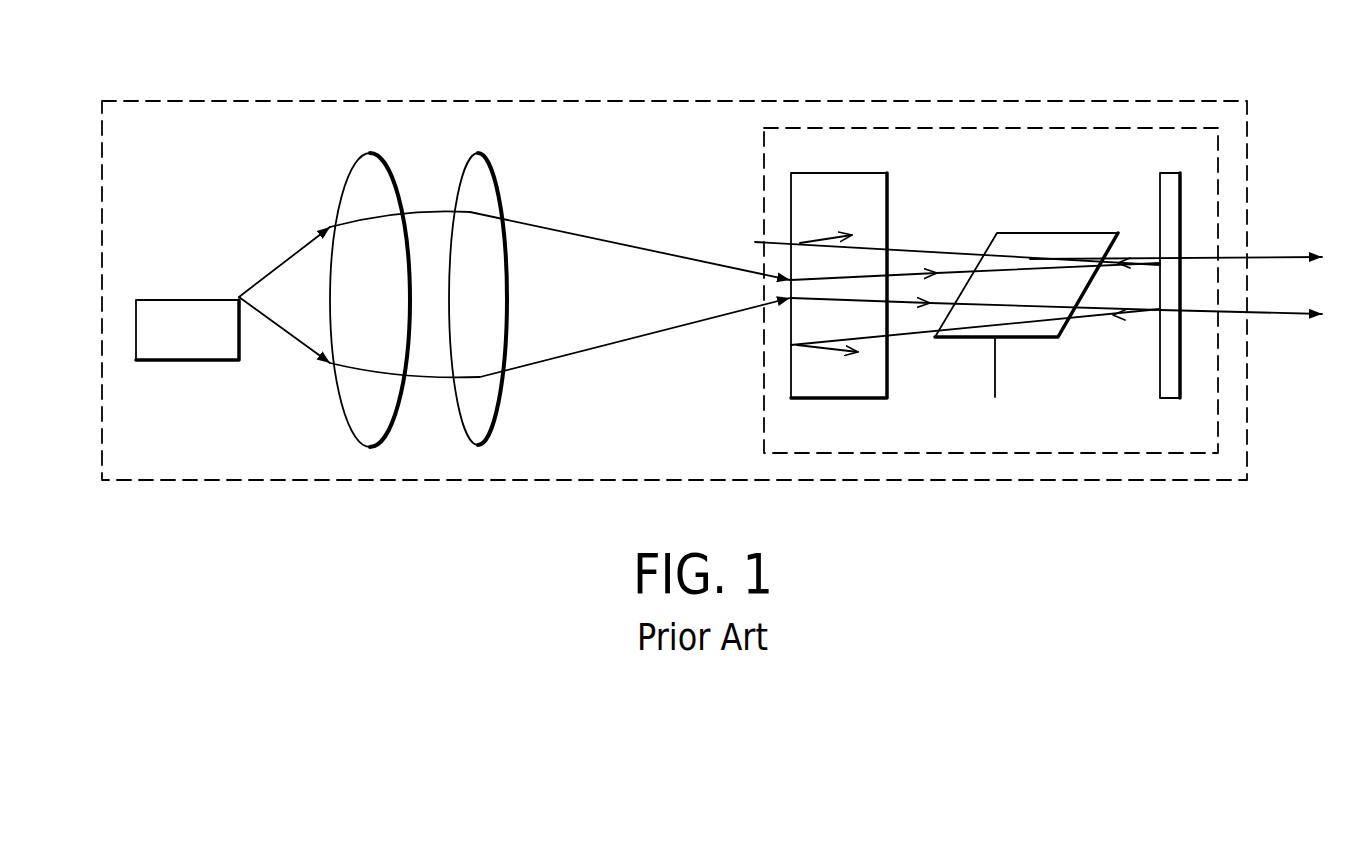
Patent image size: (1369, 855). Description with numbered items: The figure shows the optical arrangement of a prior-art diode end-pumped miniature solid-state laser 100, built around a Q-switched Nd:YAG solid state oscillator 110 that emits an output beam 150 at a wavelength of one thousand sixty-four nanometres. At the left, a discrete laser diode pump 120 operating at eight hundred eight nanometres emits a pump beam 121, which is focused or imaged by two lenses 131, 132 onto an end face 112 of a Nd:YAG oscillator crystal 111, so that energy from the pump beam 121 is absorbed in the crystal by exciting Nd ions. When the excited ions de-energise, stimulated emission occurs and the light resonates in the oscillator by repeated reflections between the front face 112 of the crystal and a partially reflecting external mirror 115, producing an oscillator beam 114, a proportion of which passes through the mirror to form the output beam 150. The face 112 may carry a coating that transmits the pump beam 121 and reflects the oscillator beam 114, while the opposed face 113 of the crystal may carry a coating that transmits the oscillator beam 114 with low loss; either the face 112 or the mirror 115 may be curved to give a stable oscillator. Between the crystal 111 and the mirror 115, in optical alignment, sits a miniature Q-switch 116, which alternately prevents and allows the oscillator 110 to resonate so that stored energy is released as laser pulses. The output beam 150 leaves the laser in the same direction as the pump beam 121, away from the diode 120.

The diode end-pumped miniature solid-state laser 100 is at (427, 102).
The Q-switched Nd:YAG solid state oscillator 110 is at (890, 128).
The Nd:YAG oscillator crystal 111 is at (842, 192).
The end face 112 is at (755, 242).
The opposed face 113 is at (887, 240).
The oscillator beam 114 is at (953, 252).
The partially reflecting external mirror 115 is at (1172, 178).
The Q-switch 116 is at (1038, 248).
The laser diode pump 120 is at (228, 286).
The pump beam 121 is at (290, 335).
The lens 131 is at (367, 448).
The lens 132 is at (480, 447).
The output beam 150 is at (1260, 287).